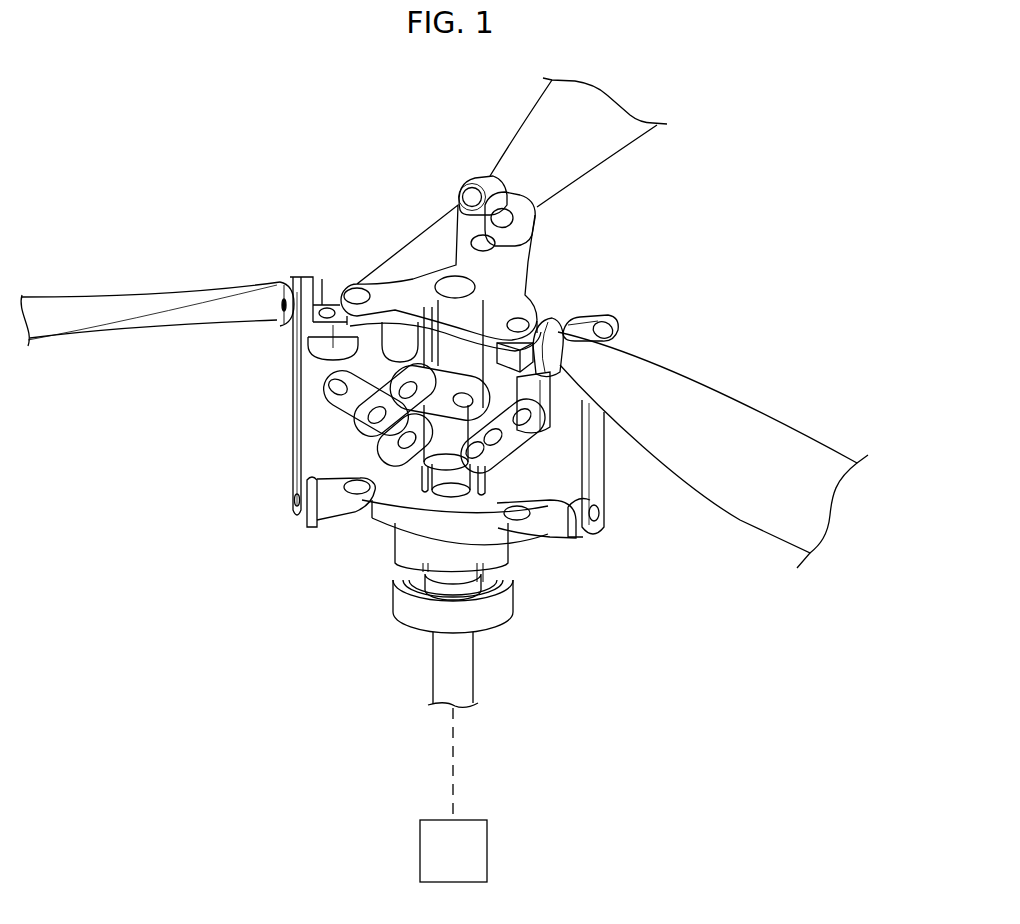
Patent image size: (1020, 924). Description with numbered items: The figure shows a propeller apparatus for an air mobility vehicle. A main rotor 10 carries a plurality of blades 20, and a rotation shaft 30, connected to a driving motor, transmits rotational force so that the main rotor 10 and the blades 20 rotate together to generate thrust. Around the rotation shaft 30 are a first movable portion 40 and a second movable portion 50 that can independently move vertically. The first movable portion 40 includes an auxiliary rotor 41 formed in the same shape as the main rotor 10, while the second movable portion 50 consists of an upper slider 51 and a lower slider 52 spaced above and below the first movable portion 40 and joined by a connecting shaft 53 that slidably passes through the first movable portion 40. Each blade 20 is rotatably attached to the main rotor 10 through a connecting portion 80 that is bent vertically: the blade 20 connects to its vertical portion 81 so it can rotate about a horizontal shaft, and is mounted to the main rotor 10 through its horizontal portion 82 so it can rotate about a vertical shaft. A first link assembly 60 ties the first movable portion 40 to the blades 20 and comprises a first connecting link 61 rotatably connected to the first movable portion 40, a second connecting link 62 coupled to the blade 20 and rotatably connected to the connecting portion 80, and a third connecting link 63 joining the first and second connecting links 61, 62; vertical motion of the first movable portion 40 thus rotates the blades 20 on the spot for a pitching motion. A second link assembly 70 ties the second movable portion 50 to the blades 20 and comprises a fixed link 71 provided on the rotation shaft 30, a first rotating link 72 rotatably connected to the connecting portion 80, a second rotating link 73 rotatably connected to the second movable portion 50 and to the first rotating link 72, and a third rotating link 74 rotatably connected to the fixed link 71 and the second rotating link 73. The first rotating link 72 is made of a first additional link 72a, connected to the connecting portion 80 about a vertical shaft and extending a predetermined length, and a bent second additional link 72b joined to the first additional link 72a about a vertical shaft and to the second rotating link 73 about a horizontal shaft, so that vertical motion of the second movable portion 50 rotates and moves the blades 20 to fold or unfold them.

The main rotor 10 is at (472, 257).
The blades 20 is at (88, 306).
The rotation shaft 30 is at (453, 680).
The first movable portion 40 is at (423, 552).
The auxiliary rotor 41 is at (462, 522).
The second movable portion 50 is at (445, 566).
The upper slider 51 is at (527, 527).
The lower slider 52 is at (427, 617).
The connecting shaft 53 is at (418, 490).
The first link assembly 60 is at (437, 417).
The first connecting link 61 is at (292, 508).
The second connecting link 62 is at (283, 282).
The third connecting link 63 is at (297, 368).
The second link assembly 70 is at (461, 405).
The fixed link 71 is at (450, 395).
The first rotating link 72 is at (405, 148).
The first additional link 72a is at (332, 350).
The second additional link 72b is at (380, 347).
The second rotating link 73 is at (330, 406).
The third rotating link 74 is at (365, 420).
The connecting portion 80 is at (622, 247).
The vertical portion 81 is at (557, 318).
The horizontal portion 82 is at (510, 352).